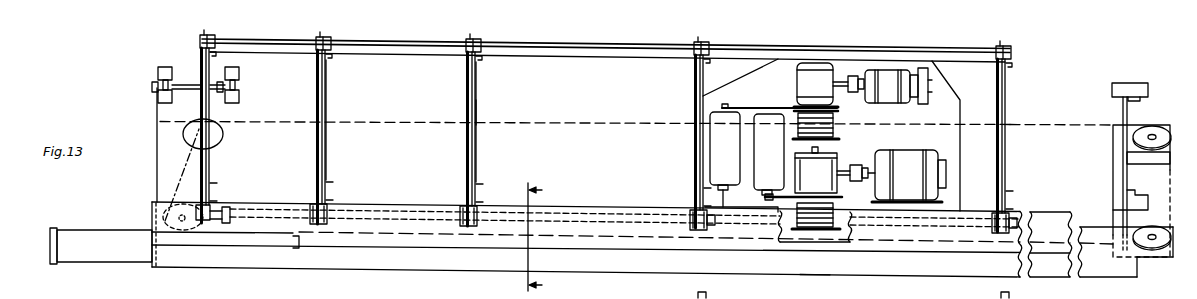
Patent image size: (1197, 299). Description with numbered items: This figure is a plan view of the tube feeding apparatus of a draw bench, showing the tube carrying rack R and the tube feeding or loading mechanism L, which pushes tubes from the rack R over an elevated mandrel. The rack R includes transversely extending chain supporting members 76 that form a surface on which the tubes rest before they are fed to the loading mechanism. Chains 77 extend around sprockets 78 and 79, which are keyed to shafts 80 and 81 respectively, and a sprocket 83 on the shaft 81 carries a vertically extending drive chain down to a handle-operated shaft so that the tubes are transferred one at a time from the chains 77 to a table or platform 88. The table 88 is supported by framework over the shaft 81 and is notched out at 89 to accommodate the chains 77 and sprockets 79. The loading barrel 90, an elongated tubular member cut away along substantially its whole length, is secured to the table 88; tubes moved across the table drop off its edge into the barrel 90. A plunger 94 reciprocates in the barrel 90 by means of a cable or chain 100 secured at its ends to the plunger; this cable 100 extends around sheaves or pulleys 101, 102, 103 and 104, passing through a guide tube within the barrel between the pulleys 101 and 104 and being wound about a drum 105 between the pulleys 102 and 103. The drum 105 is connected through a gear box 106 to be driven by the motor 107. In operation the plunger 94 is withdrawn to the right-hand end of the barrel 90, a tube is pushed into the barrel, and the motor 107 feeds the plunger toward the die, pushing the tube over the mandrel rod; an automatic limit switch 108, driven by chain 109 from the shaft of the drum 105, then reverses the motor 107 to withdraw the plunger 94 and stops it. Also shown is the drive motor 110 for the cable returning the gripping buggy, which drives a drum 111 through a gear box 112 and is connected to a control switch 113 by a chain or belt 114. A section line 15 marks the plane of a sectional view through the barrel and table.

The section line 15 is at (545, 238).
The transversely extending chain supporting members 76 is at (212, 162).
The chains 77 is at (325, 84).
The sprockets 78 is at (705, 40).
The sprockets 79 is at (691, 212).
The shaft 80 is at (621, 43).
The shaft 81 is at (282, 210).
The sprocket 83 is at (226, 207).
The table or platform 88 is at (358, 222).
The notches 89 is at (327, 218).
The loading barrel 90 is at (450, 265).
The plunger 94 is at (105, 254).
The cable or chain 100 is at (1079, 126).
The pulley 101 is at (160, 221).
The pulley 102 is at (224, 134).
The pulley 103 is at (1177, 112).
The pulley 104 is at (1140, 245).
The drum 105 is at (835, 120).
The gear box 106 is at (813, 76).
The motor 107 is at (887, 80).
The automatic limit switch 108 is at (719, 157).
The chain 109 is at (752, 108).
The drive motor 110 is at (897, 166).
The drum 111 is at (835, 213).
The gear box 112 is at (832, 157).
The control switch 113 is at (762, 174).
The chain or belt 114 is at (786, 208).
The tube carrying rack R is at (480, 112).
The tube feeding or loading mechanism L is at (815, 268).